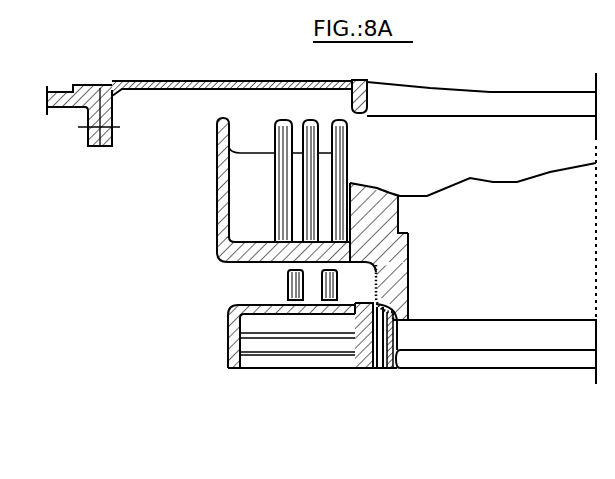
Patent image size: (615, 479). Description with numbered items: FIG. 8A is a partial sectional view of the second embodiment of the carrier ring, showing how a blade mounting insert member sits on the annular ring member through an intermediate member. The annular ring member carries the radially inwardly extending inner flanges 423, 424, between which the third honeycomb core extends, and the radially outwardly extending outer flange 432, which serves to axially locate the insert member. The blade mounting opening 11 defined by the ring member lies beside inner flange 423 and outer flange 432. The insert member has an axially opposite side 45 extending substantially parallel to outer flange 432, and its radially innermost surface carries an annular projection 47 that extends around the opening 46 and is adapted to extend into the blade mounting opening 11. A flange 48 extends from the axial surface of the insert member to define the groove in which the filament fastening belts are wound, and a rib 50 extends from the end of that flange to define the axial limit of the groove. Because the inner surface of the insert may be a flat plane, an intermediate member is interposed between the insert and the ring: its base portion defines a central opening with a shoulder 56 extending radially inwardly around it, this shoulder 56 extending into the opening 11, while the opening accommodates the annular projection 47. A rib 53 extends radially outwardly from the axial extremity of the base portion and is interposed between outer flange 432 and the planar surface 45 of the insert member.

The blade mounting opening 11 is at (385, 369).
The axially opposite side 45 is at (372, 202).
The opening 46 is at (517, 102).
The annular projection 47 is at (394, 293).
The flange 48 is at (220, 263).
The rib 50 is at (222, 186).
The rib 53 is at (379, 282).
The shoulder 56 is at (408, 318).
The inner flange 423 is at (363, 352).
The inner flange 424 is at (230, 357).
The outer flange 432 is at (408, 248).